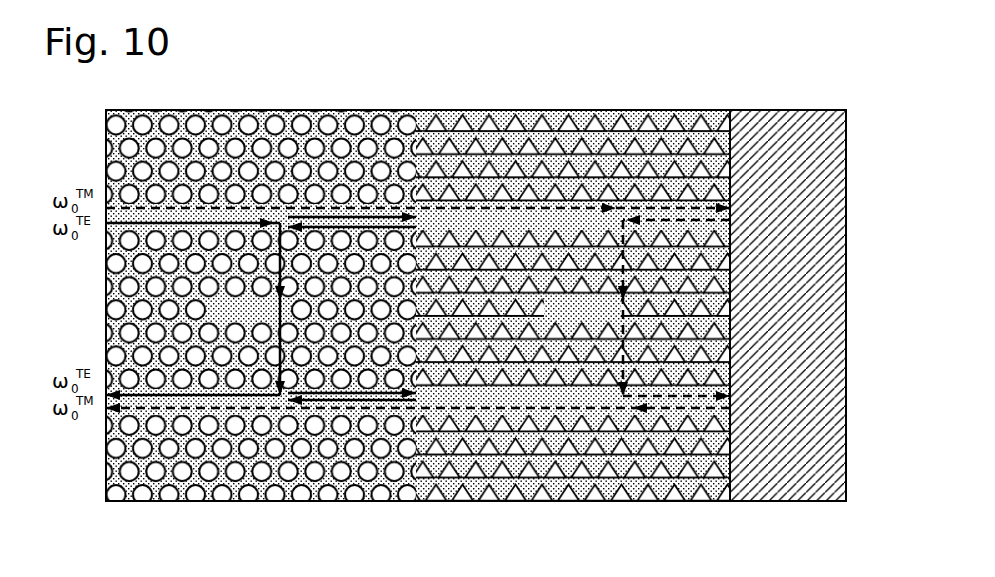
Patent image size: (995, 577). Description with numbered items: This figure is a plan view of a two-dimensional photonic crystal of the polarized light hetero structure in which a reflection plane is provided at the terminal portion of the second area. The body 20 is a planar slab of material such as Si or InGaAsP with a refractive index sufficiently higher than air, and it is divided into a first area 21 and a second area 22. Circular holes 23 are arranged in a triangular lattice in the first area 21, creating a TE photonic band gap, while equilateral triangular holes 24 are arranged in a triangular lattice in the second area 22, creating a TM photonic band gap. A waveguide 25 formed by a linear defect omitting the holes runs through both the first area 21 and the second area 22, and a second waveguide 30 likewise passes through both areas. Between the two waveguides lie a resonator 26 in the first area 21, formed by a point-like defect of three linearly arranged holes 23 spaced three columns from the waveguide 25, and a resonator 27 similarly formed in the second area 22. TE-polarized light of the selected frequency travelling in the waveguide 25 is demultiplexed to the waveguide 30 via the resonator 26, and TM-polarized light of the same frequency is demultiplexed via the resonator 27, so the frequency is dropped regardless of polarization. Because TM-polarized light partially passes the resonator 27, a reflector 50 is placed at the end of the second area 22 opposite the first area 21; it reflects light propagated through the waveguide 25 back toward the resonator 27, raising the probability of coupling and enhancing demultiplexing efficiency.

The body 20 is at (502, 310).
The first area 21 is at (261, 315).
The second area 22 is at (656, 315).
The circular holes 23 is at (162, 488).
The equilateral triangular holes 24 is at (520, 494).
The waveguide 25 is at (724, 198).
The resonator 26 is at (247, 306).
The resonator 27 is at (575, 300).
The waveguide 30 is at (724, 382).
The reflector 50 is at (763, 468).